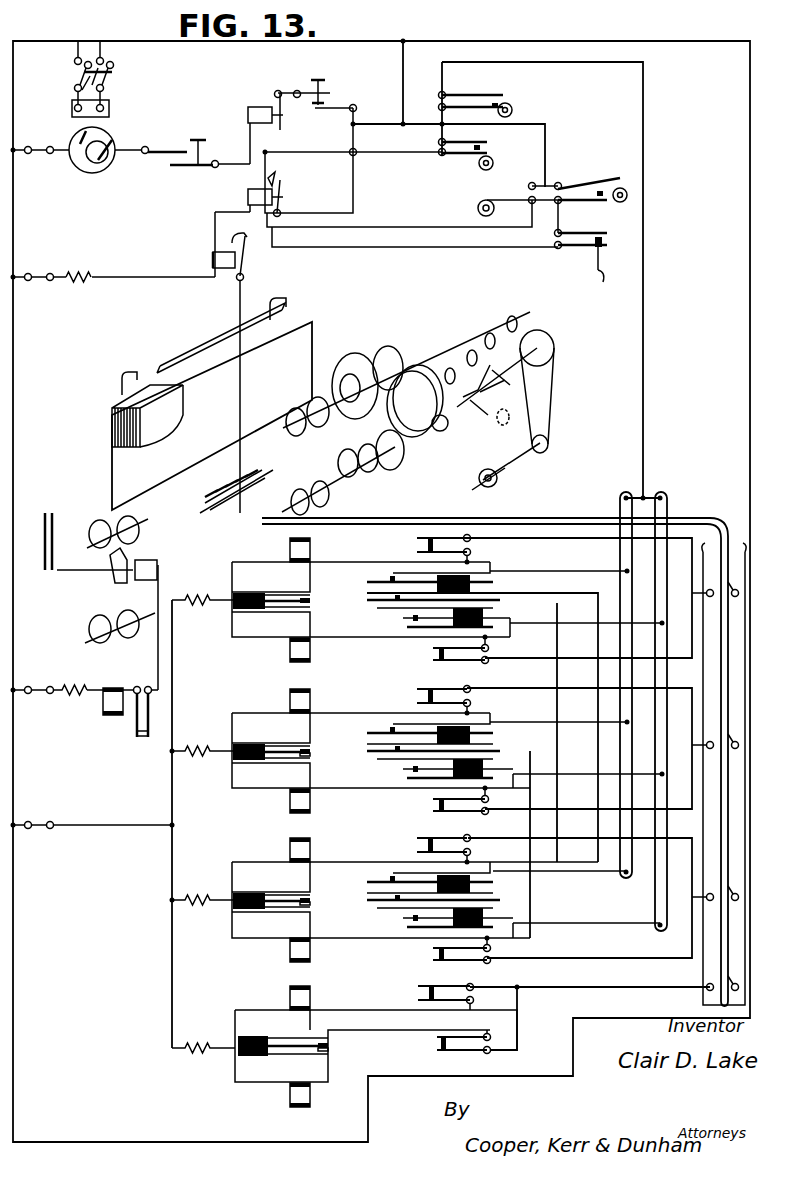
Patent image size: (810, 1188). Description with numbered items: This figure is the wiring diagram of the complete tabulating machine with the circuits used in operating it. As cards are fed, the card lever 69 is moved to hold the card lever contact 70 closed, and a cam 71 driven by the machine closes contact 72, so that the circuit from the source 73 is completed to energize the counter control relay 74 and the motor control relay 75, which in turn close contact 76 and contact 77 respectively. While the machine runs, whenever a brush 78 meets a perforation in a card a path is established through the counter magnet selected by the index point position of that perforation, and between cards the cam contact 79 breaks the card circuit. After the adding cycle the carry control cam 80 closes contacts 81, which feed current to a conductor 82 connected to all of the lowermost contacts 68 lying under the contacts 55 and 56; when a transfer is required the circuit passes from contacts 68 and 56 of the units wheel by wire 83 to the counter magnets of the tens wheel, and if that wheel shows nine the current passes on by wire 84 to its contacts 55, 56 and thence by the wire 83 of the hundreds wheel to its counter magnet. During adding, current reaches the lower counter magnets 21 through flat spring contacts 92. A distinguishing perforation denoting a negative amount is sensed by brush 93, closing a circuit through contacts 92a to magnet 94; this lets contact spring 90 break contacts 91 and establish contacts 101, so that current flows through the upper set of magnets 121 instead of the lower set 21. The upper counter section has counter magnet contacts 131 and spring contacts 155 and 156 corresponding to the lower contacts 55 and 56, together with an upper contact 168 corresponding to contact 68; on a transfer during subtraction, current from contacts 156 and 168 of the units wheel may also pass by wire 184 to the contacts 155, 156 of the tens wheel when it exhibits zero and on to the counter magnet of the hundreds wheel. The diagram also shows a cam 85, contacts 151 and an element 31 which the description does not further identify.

The source 73 is at (93, 67).
The motor control relay 75 is at (248, 196).
The counter control relay 74 is at (213, 258).
The contact 77 is at (277, 176).
The contact 76 is at (249, 248).
The contacts 81 is at (457, 99).
The carry control cam 80 is at (514, 104).
The cam 85 is at (494, 160).
The contact 72 is at (596, 181).
The cam 71 is at (629, 190).
The cam contact 79 is at (478, 206).
The conductor 82 is at (562, 222).
The card lever contact 70 is at (603, 240).
The card lever 69 is at (100, 590).
The wire 83 is at (243, 373).
The brush 78 is at (253, 478).
The brush 93 is at (132, 579).
The upper counter magnets 121 is at (290, 545).
The lower counter magnets 21 is at (290, 657).
The flat spring contacts 92 is at (295, 608).
The contacts 101 is at (308, 746).
The contact spring 90 is at (312, 750).
The contacts 91 is at (312, 757).
The contact 151 is at (417, 544).
The counter magnet contacts 131 is at (417, 696).
The upper contact 168 is at (390, 573).
The spring contact 156 is at (368, 583).
The spring contact 155 is at (368, 599).
The contacts 55 is at (372, 603).
The contacts 56 is at (392, 620).
The lowermost contacts 68 is at (410, 632).
The contact 31 is at (437, 656).
The wire 184 is at (598, 603).
The wire 84 is at (531, 893).
The magnet 94 is at (110, 708).
The contacts 92a is at (146, 738).